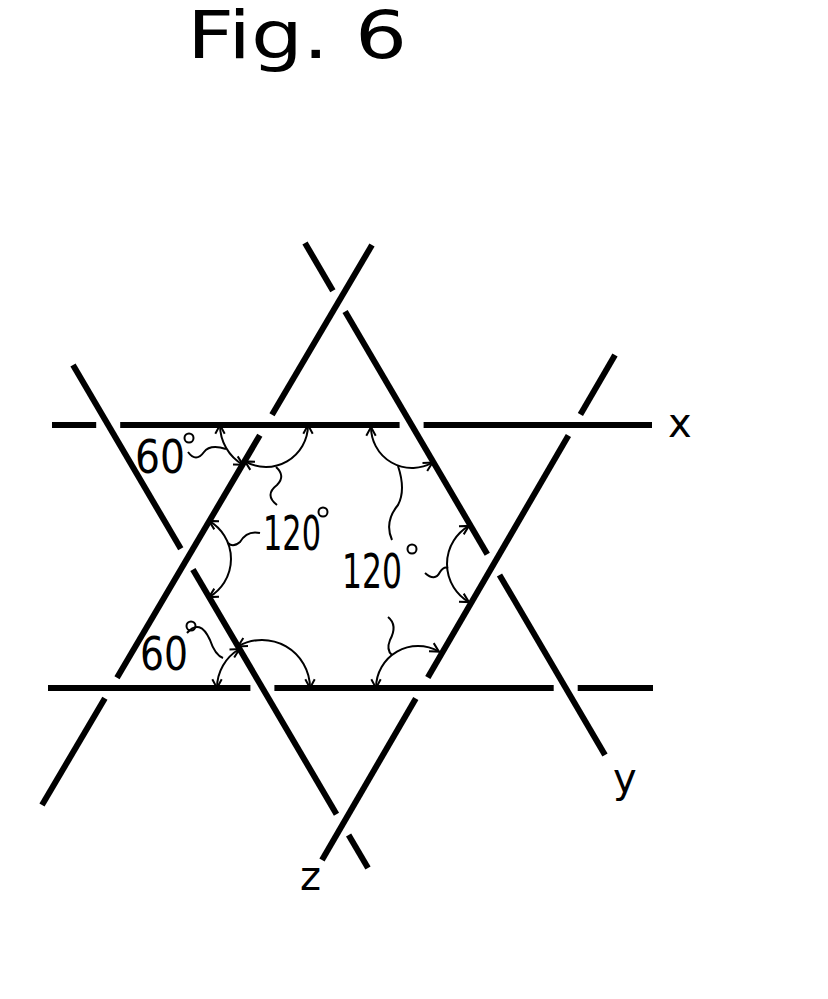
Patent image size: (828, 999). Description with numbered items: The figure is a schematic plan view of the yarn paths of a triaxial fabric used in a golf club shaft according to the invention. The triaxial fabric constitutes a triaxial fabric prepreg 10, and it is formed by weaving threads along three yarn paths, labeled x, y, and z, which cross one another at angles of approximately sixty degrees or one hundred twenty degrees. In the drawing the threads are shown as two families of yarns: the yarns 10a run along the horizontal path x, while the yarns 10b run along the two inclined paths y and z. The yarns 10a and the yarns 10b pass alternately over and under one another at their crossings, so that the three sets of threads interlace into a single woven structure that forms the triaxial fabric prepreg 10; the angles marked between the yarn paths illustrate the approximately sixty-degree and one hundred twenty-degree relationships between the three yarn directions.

The triaxial fabric prepreg 10 is at (388, 555).
The horizontal yarns 10a is at (625, 432).
The diagonal yarns 10b is at (393, 748).